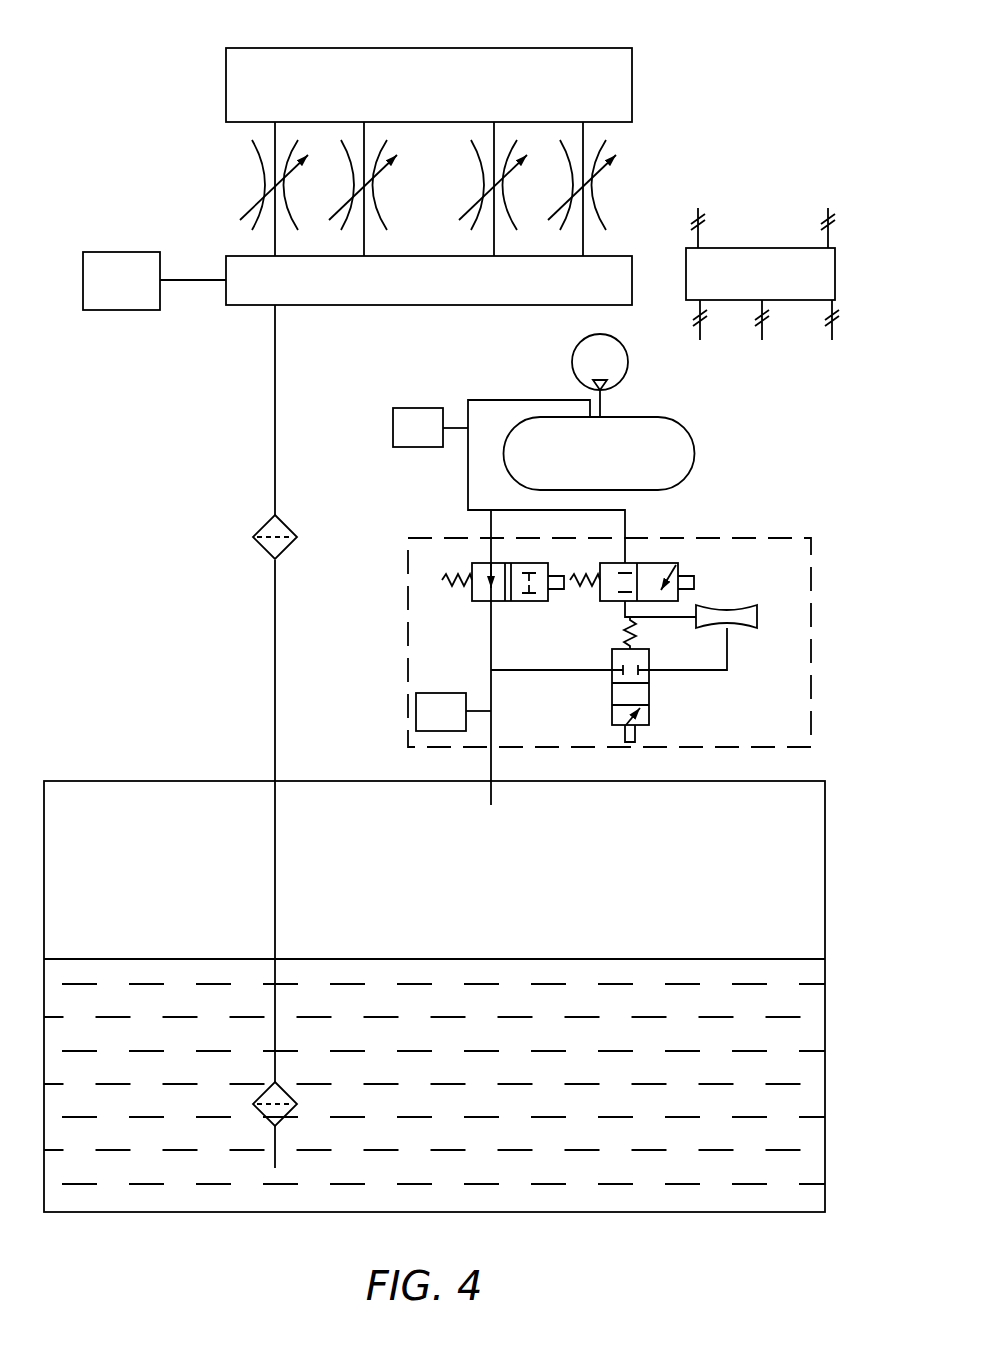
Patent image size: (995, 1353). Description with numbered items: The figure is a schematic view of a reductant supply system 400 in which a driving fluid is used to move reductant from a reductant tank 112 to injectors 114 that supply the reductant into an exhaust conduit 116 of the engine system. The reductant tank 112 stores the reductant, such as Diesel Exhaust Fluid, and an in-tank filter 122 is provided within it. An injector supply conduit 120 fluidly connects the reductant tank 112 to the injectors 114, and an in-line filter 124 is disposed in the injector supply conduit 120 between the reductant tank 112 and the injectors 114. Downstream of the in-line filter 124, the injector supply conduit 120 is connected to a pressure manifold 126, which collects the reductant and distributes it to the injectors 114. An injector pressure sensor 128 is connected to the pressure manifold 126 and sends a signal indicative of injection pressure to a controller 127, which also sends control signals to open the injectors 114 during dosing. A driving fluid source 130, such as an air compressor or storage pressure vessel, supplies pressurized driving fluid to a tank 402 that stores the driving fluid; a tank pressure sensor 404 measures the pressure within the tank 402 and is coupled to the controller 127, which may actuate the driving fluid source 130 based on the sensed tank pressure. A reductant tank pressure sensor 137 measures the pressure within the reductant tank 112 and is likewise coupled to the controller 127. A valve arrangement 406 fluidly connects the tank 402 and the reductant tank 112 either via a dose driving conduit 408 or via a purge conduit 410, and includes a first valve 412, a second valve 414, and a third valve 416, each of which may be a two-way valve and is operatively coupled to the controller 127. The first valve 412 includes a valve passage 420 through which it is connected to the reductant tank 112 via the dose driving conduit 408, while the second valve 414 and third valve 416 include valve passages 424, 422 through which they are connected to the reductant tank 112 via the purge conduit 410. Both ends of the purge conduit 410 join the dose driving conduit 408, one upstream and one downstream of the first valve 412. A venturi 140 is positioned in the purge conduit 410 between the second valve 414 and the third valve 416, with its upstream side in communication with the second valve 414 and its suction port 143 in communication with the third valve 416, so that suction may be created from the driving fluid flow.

The reductant supply system 400 is at (715, 45).
The reductant tank 112 is at (780, 1212).
The injector 114 is at (224, 158).
The exhaust conduit 116 is at (429, 85).
The injector supply conduit 120 is at (275, 407).
The in-tank filter 122 is at (285, 1094).
The in-line filter 124 is at (258, 548).
The pressure manifold 126 is at (429, 280).
The controller 127 is at (762, 274).
The injector pressure sensor 128 is at (104, 252).
The driving fluid source 130 is at (575, 350).
The reductant tank pressure sensor 137 is at (409, 717).
The venturi 140 is at (727, 605).
The suction port 143 is at (728, 628).
The tank 402 is at (599, 453).
The tank pressure sensor 404 is at (415, 408).
The valve arrangement 406 is at (812, 593).
The dose driving conduit 408 is at (491, 733).
The purge conduit 410 is at (628, 525).
The first valve 412 is at (485, 562).
The second valve 414 is at (652, 565).
The third valve 416 is at (642, 706).
The valve passage 420 is at (488, 586).
The valve passage 422 is at (640, 732).
The valve passage 424 is at (680, 572).